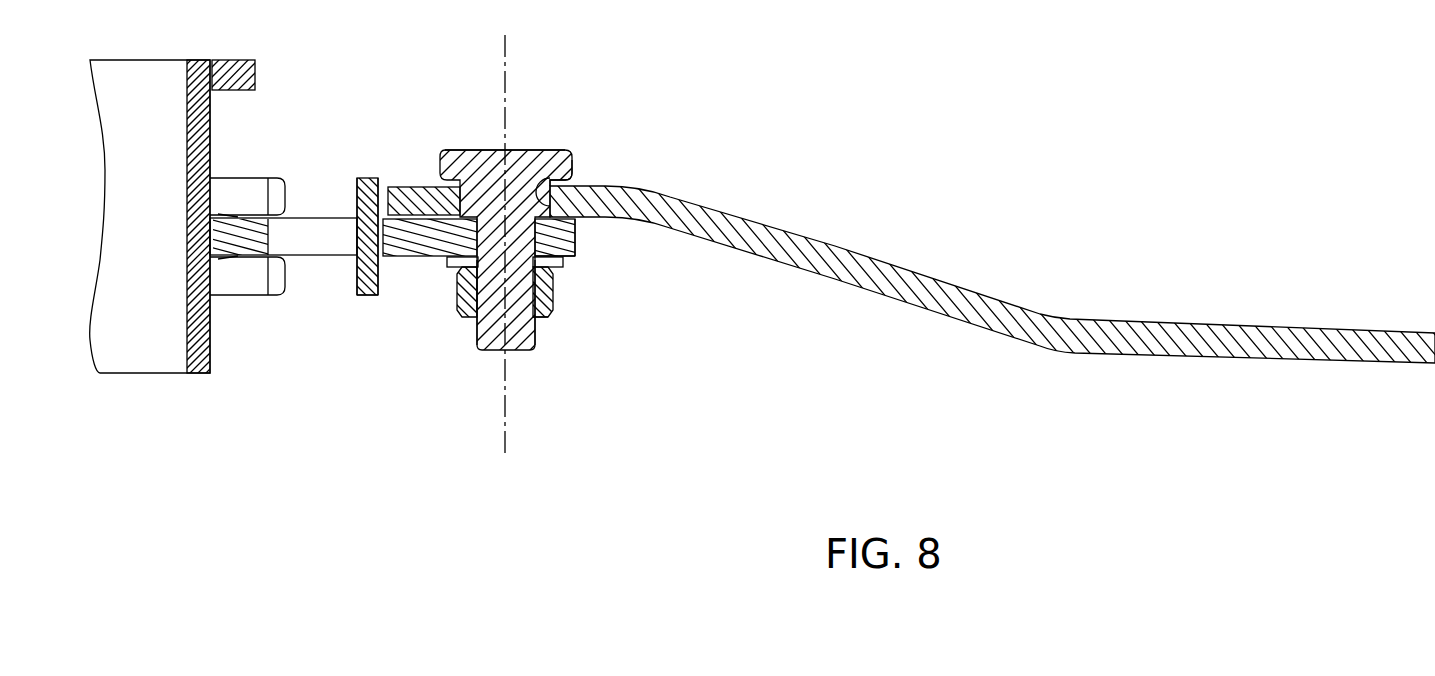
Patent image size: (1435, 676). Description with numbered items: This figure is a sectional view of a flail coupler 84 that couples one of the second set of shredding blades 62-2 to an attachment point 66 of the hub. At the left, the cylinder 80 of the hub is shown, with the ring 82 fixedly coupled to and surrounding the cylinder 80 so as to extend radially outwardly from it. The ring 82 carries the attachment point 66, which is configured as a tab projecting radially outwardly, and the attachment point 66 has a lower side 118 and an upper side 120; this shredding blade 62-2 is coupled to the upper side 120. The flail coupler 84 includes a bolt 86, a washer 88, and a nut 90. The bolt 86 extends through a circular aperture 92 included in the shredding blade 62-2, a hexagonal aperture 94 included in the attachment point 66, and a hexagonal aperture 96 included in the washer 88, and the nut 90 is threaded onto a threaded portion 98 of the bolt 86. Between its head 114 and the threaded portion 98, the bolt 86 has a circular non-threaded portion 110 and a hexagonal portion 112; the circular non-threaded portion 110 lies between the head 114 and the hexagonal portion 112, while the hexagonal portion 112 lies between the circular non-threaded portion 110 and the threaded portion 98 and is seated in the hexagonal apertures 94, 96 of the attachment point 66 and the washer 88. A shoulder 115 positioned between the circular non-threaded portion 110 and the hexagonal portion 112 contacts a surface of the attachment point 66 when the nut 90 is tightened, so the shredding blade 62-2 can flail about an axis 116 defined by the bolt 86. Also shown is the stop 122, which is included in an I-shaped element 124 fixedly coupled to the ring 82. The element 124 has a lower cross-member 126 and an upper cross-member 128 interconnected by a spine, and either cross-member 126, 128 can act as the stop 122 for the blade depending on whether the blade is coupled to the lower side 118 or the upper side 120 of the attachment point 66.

The second set of shredding blades 62-2 is at (881, 262).
The attachment point 66 is at (577, 252).
The cylinder 80 is at (210, 128).
The ring 82 is at (398, 290).
The flail coupler 84 is at (561, 138).
The bolt 86 is at (549, 168).
The washer 88 is at (562, 266).
The nut 90 is at (553, 300).
The circular aperture 92 is at (578, 177).
The hexagonal aperture 94 is at (503, 245).
The hexagonal aperture 96 is at (480, 245).
The threaded portion 98 is at (547, 310).
The circular non-threaded portion 110 is at (455, 187).
The hexagonal portion 112 is at (577, 240).
The head 114 is at (482, 150).
The shoulder 115 is at (576, 232).
The axis 116 is at (505, 70).
The lower side 118 is at (418, 258).
The upper side 120 is at (408, 219).
The stop 122 is at (363, 177).
The I-shaped element 124 is at (348, 190).
The lower cross-member 126 is at (363, 296).
The upper cross-member 128 is at (388, 163).